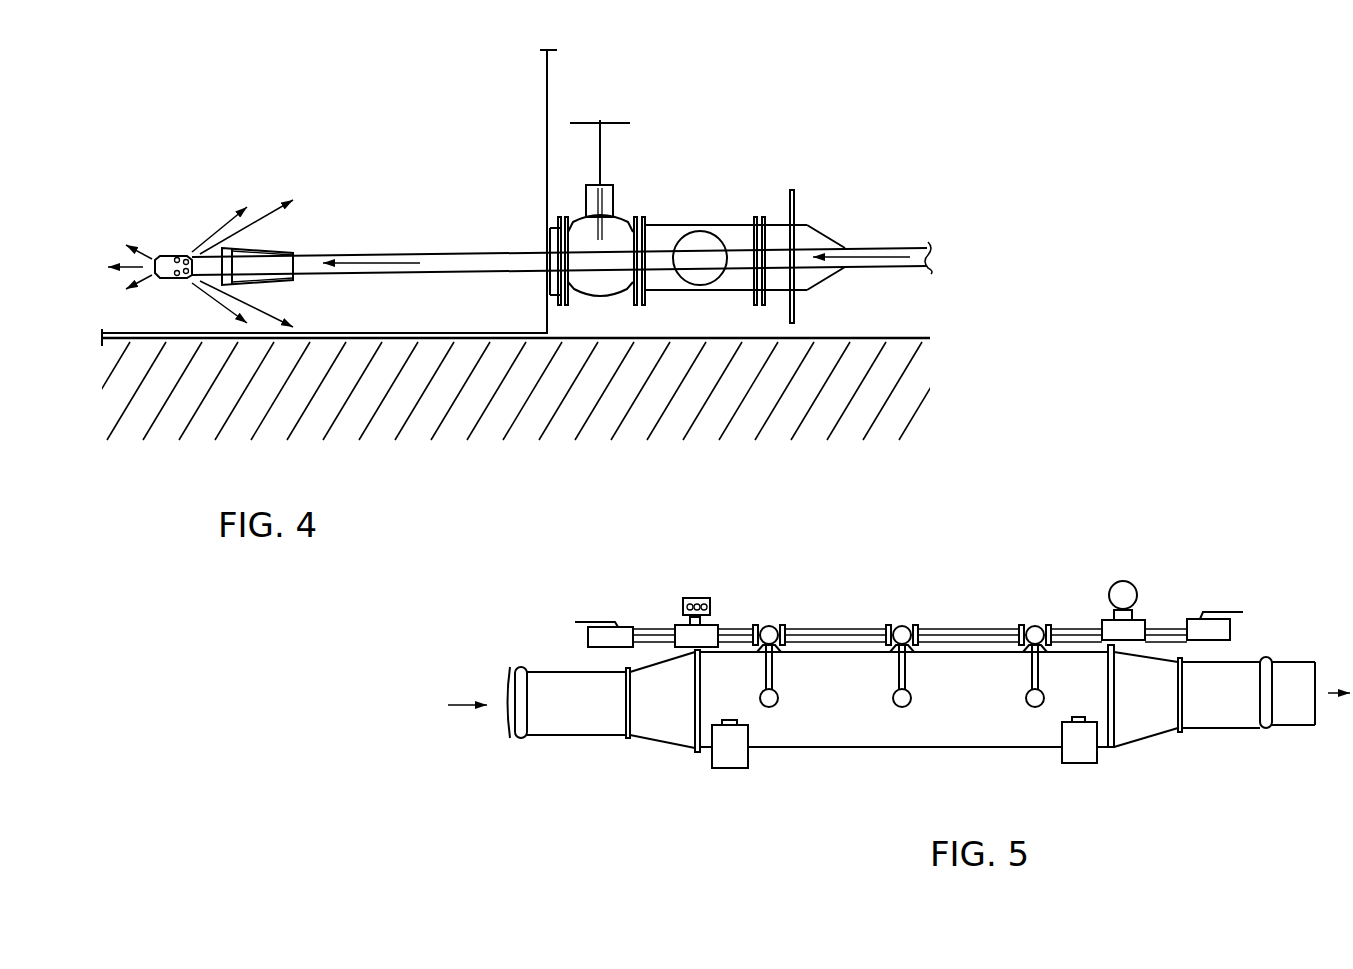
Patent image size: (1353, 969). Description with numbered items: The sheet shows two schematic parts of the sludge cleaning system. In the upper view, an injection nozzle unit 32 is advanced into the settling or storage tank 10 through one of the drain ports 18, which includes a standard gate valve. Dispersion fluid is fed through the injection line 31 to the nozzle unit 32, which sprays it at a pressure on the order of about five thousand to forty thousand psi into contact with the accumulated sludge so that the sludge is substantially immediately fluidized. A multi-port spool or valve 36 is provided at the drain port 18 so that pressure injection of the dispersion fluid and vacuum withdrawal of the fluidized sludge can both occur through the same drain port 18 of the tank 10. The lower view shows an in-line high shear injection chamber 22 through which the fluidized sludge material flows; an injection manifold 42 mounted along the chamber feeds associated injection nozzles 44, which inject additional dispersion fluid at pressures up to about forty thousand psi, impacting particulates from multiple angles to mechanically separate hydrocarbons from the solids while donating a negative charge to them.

In FIG. 4, the tank 10 is at (547, 100).
In FIG. 4, the drain port 18 is at (615, 232).
In FIG. 5, the in-line high shear injection chamber 22 is at (1027, 573).
In FIG. 4, the injection line 31 is at (878, 248).
In FIG. 4, the injection nozzle unit 32 is at (177, 252).
In FIG. 4, the multi-port spool or valve 36 is at (729, 204).
In FIG. 5, the injection manifold 42 is at (940, 628).
In FIG. 5, the injection nozzles 44 is at (777, 704).